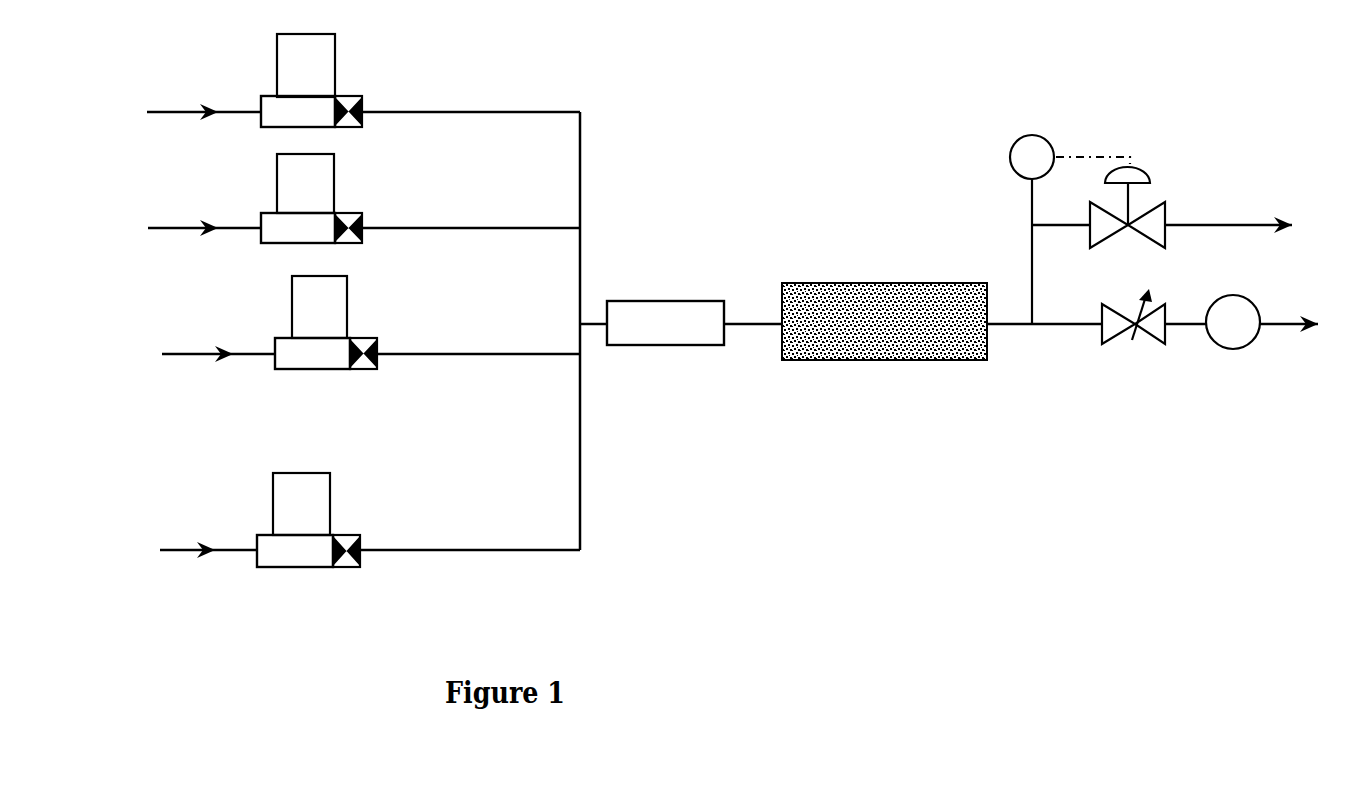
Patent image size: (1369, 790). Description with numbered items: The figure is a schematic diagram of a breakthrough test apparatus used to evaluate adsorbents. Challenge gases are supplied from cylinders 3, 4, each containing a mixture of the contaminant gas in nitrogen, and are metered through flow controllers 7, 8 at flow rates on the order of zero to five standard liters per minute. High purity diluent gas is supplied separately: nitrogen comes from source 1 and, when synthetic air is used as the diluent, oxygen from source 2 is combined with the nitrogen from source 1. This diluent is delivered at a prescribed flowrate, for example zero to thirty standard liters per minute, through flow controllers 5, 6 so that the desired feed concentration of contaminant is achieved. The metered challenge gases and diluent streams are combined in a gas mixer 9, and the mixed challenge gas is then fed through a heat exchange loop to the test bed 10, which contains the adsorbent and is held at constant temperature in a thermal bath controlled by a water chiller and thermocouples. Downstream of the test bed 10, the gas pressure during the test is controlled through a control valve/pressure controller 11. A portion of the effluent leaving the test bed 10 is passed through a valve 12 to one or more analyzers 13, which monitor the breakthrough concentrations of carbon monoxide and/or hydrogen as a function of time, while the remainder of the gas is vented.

The nitrogen source 1 is at (120, 127).
The oxygen source 2 is at (120, 245).
The challenge gas cylinder 3 is at (133, 370).
The challenge gas cylinder 4 is at (130, 552).
The flow controller 5 is at (325, 128).
The flow controller 6 is at (325, 243).
The flow controller 7 is at (338, 368).
The flow controller 8 is at (303, 567).
The gas mixer 9 is at (678, 344).
The test bed 10 is at (898, 356).
The control valve/pressure controller 11 is at (1088, 152).
The valve 12 is at (1147, 340).
The analyzer 13 is at (1237, 351).